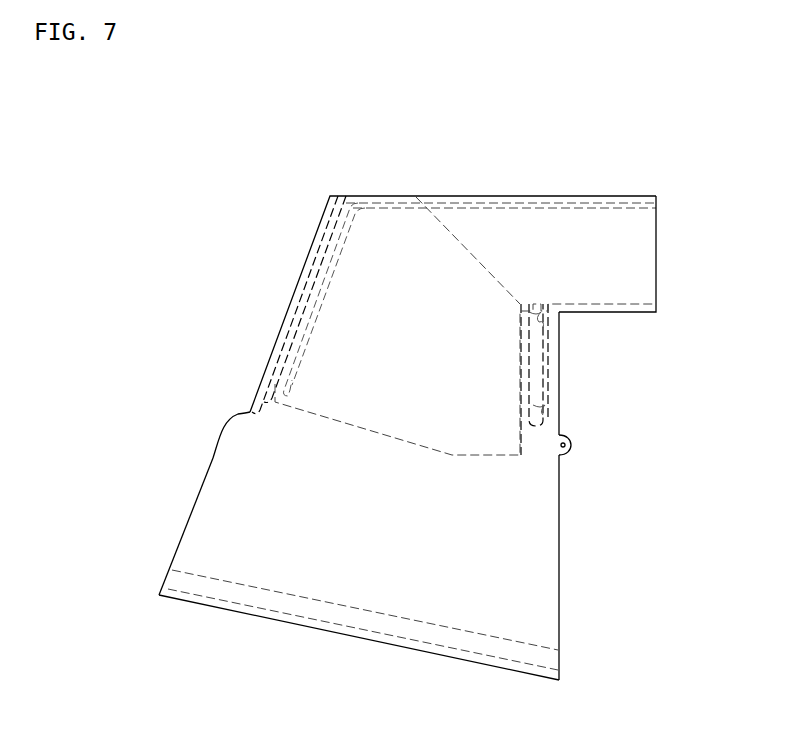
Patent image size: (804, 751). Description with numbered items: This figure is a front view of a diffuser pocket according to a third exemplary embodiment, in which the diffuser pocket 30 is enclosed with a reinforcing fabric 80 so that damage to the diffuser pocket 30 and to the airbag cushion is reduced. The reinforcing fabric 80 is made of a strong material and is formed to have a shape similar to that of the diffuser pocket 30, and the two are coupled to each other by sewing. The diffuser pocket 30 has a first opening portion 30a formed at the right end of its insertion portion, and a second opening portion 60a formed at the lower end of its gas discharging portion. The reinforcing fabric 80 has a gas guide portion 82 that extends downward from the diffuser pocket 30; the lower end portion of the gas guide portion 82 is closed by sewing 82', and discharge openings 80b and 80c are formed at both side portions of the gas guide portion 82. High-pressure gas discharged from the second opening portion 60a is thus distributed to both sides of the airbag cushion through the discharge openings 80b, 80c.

The diffuser pocket 30 is at (412, 276).
The first opening portion 30a is at (656, 253).
The reinforcing fabric 80 is at (256, 478).
The discharge opening 80b is at (180, 542).
The discharge opening 80c is at (559, 608).
The gas guide portion 82 is at (365, 633).
The sewing 82' is at (363, 657).
The second opening portion 60a is at (388, 436).